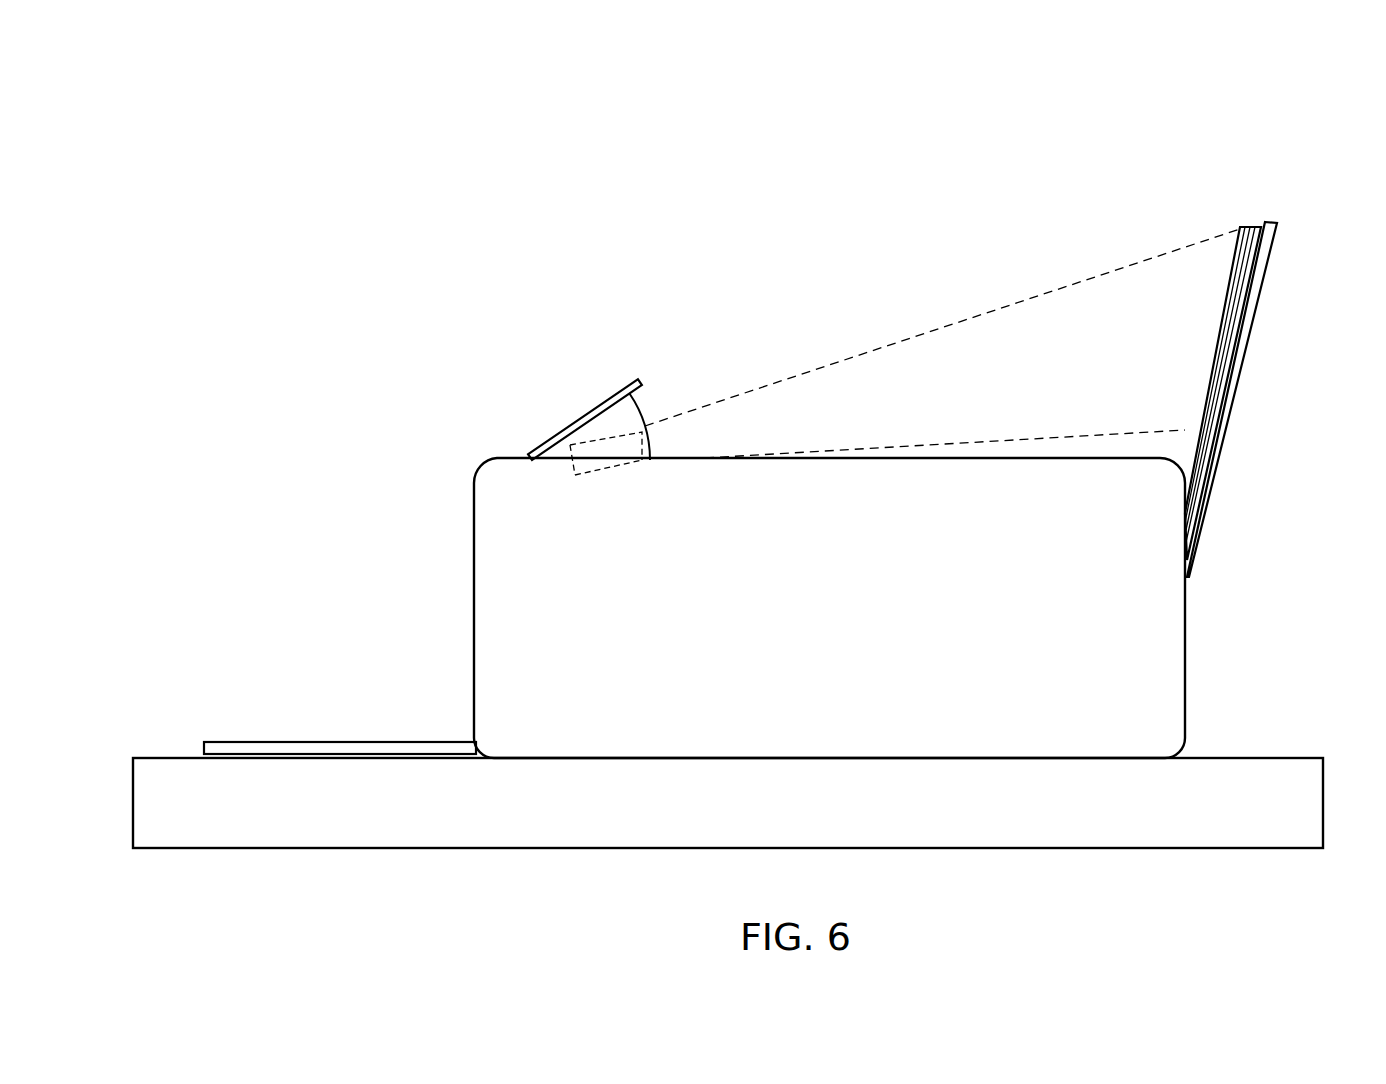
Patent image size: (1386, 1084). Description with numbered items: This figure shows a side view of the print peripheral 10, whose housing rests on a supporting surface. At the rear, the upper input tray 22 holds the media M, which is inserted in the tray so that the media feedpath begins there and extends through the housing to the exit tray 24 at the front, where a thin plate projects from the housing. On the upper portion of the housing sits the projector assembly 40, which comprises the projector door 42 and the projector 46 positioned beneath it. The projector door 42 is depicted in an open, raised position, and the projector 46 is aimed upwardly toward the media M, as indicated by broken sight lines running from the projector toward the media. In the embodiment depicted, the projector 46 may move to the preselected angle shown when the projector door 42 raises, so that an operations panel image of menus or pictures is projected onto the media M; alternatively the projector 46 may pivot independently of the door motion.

The peripheral 10 is at (388, 208).
The input tray 22 is at (1232, 370).
The exit tray 24 is at (258, 746).
The projector assembly 40 is at (567, 410).
The projector door 42 is at (611, 404).
The projector 46 is at (645, 408).
The media M is at (1247, 222).